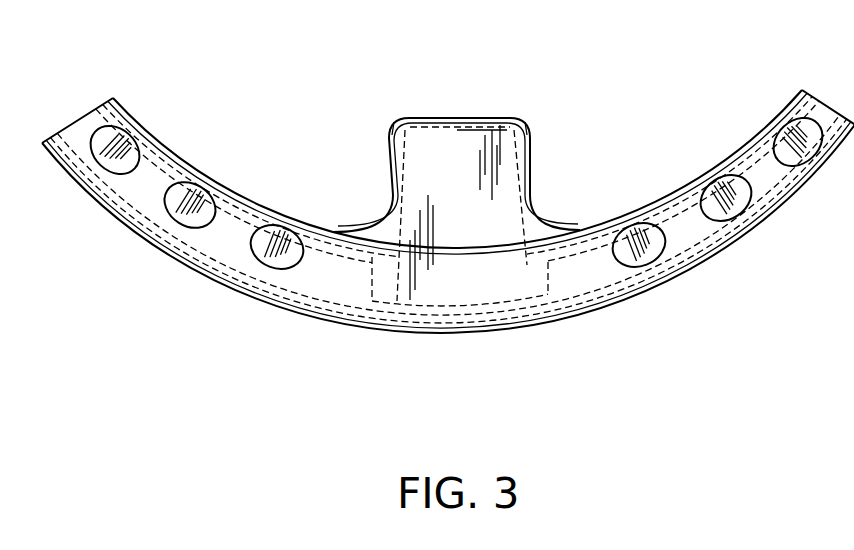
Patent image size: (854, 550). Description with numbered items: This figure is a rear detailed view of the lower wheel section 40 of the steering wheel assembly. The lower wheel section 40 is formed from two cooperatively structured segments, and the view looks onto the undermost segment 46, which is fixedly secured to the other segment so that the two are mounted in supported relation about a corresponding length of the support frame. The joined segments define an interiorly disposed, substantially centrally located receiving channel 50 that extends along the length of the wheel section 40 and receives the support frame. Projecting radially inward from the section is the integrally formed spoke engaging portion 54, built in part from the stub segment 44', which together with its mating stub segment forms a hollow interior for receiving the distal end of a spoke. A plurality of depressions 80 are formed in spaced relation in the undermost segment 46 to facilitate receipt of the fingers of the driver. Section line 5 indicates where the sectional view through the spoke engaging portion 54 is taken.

The lower wheel section 40 is at (335, 337).
The segment 46 is at (227, 242).
The depressions 80 is at (182, 218).
The stub segment 44' is at (456, 209).
The spoke engaging portion 54 is at (552, 133).
The receiving channel 50 is at (337, 290).
The section line 5 is at (455, 98).